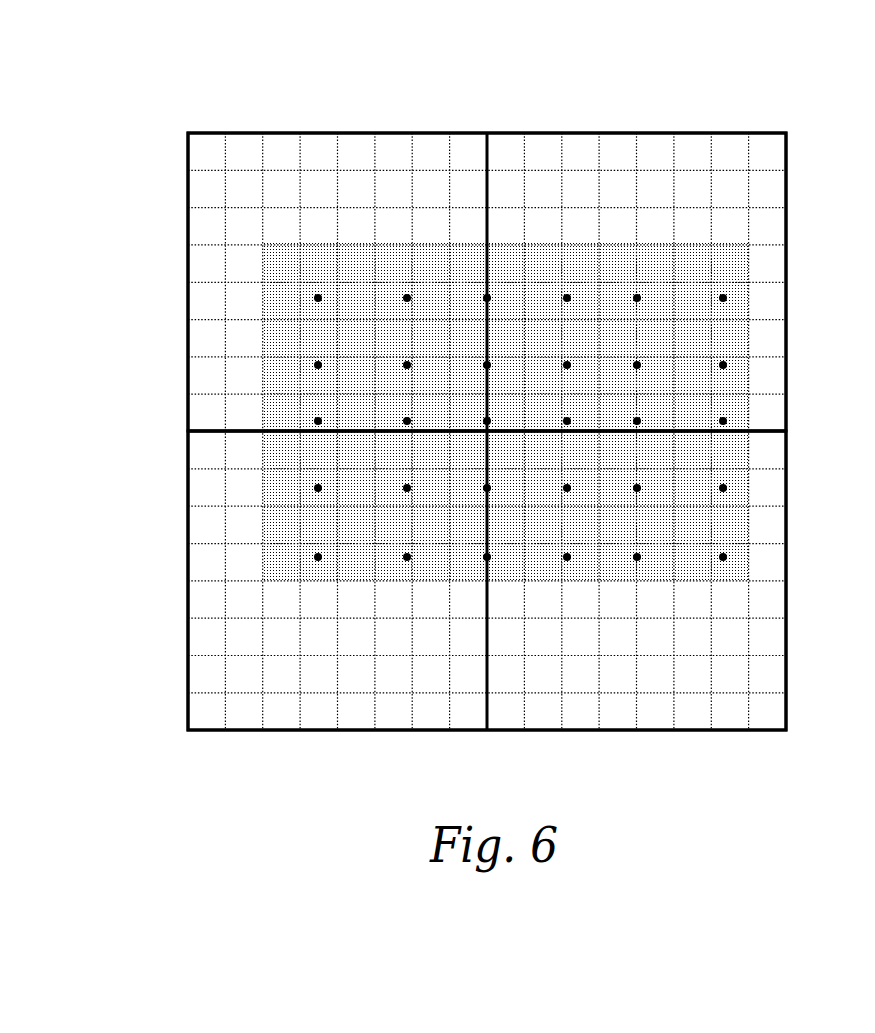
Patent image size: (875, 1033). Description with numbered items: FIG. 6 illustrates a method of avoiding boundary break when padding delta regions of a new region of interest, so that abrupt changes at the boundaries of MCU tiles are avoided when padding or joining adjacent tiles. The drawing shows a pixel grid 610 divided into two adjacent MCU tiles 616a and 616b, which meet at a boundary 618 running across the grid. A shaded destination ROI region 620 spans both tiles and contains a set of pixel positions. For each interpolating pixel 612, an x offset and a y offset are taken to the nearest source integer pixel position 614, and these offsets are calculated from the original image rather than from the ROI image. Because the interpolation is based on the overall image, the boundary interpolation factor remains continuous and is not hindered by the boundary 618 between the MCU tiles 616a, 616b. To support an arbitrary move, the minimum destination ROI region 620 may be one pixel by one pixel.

The pixel grid / image sensor array 610 is at (263, 133).
The interpolating pixel 612 is at (318, 450).
The source integer pixel 614 is at (318, 405).
The MCU tile 616a is at (188, 188).
The MCU tile 616b is at (188, 600).
The boundary 618 is at (215, 431).
The destination ROI region 620 is at (657, 243).